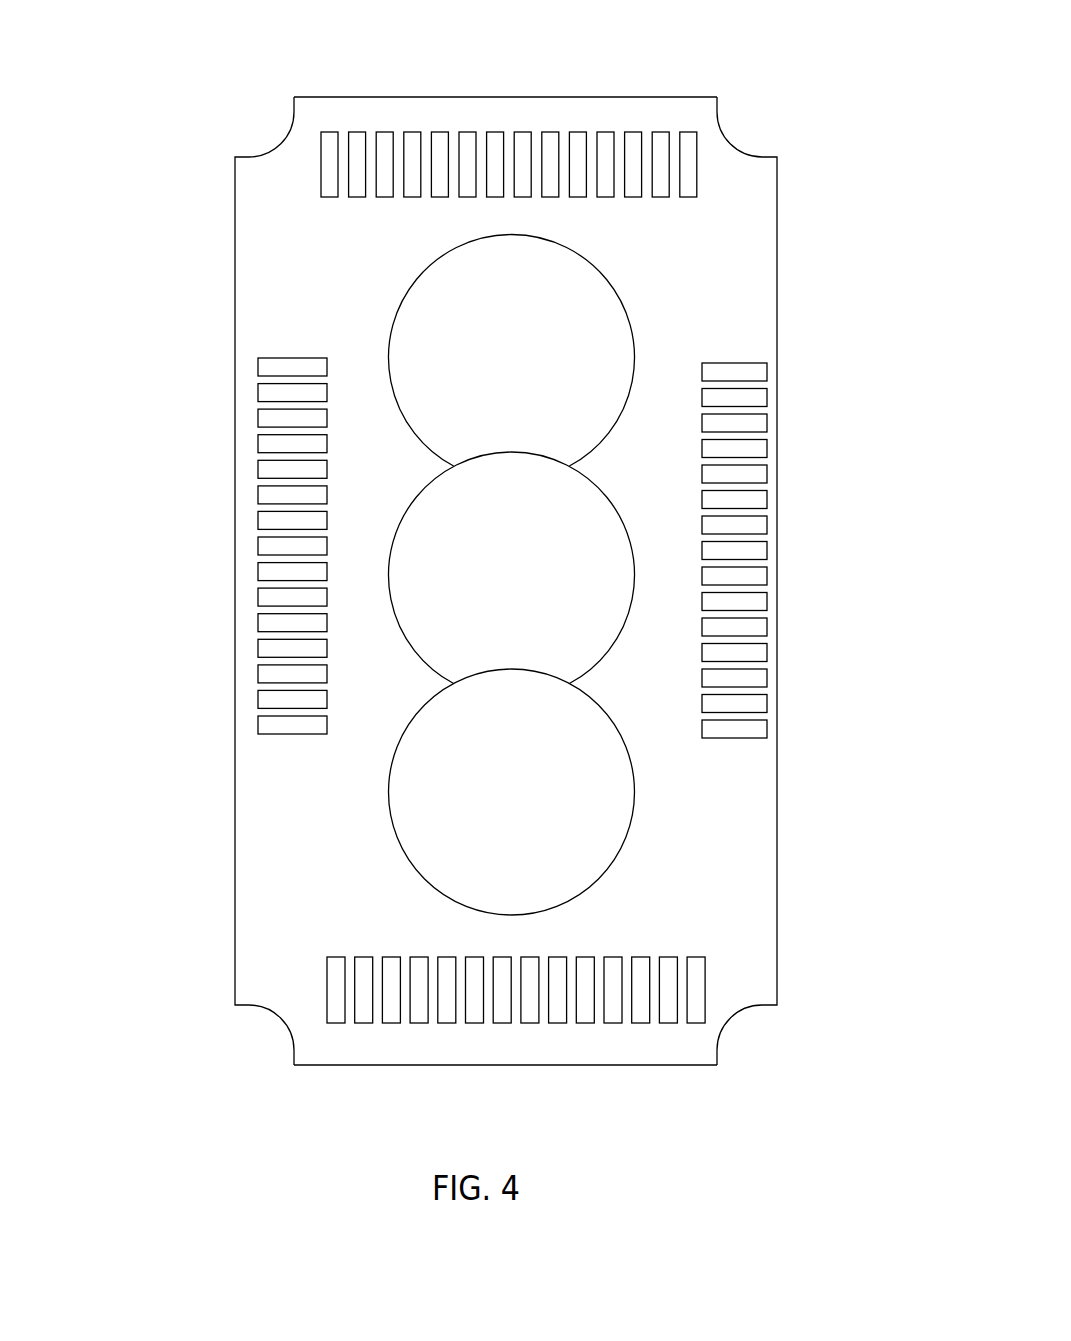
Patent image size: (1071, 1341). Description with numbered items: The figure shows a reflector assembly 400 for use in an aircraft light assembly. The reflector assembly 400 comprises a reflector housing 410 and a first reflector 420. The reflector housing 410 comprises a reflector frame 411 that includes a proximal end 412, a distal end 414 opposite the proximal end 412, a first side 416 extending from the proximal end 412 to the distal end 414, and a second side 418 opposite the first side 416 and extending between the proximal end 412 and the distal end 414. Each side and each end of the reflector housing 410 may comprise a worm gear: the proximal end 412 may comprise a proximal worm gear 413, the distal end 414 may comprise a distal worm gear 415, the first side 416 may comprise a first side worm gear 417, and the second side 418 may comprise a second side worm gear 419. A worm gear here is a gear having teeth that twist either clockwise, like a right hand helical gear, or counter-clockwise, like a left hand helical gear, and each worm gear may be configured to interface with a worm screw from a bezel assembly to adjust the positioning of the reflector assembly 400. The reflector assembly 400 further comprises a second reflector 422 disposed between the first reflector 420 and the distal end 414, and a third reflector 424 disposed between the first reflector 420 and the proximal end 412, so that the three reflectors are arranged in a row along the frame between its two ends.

The reflector assembly 400 is at (82, 72).
The reflector housing 410 is at (262, 282).
The reflector frame 411 is at (707, 213).
The proximal end 412 is at (387, 1042).
The proximal worm gear 413 is at (565, 995).
The distal end 414 is at (652, 111).
The distal worm gear 415 is at (410, 170).
The first side 416 is at (283, 810).
The first side worm gear 417 is at (273, 578).
The second side 418 is at (667, 263).
The second side worm gear 419 is at (745, 505).
The first reflector 420 is at (520, 559).
The second reflector 422 is at (523, 394).
The third reflector 424 is at (520, 803).